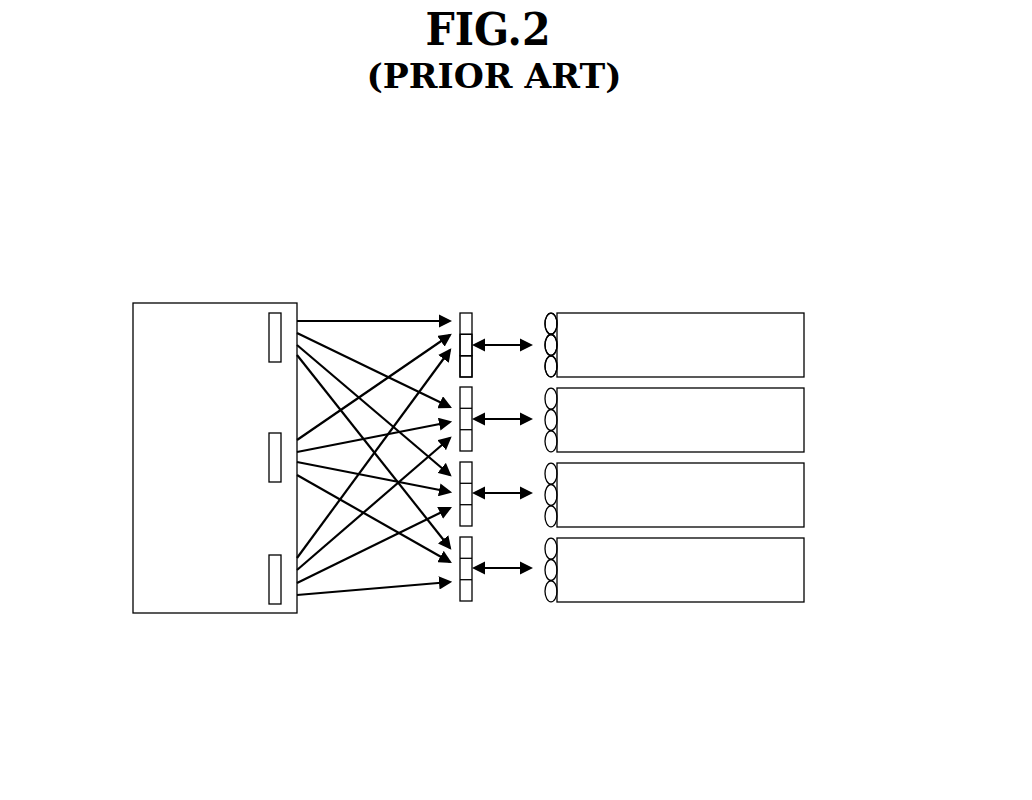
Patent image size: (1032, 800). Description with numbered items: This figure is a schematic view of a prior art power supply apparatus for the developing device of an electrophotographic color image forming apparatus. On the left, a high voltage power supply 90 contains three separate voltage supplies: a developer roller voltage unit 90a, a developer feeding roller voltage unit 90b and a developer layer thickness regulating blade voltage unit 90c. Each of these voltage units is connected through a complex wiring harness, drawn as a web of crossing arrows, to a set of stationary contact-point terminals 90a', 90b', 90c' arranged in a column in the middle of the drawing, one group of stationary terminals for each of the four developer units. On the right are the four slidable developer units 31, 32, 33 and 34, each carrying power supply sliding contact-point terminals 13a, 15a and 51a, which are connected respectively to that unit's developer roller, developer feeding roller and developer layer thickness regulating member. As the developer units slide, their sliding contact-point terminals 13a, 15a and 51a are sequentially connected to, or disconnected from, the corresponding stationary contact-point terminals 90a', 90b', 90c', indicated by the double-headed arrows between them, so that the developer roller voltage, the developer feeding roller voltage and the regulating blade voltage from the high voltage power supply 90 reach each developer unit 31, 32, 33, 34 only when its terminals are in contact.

The high voltage power supply 90 is at (133, 452).
The developer roller voltage unit 90a is at (285, 277).
The developer feeding roller voltage unit 90b is at (220, 435).
The developer layer thickness regulating blade voltage unit 90c is at (278, 641).
The stationary contact-point terminal 90a' is at (467, 296).
The stationary contact-point terminal 90b' is at (498, 302).
The stationary contact-point terminal 90c' is at (409, 325).
The power supply sliding contact-point terminal 13a is at (549, 314).
The power supply sliding contact-point terminal 15a is at (553, 342).
The power supply sliding contact-point terminal 51a is at (546, 366).
The developer unit 31 is at (804, 343).
The developer unit 32 is at (804, 415).
The developer unit 33 is at (804, 490).
The developer unit 34 is at (804, 566).